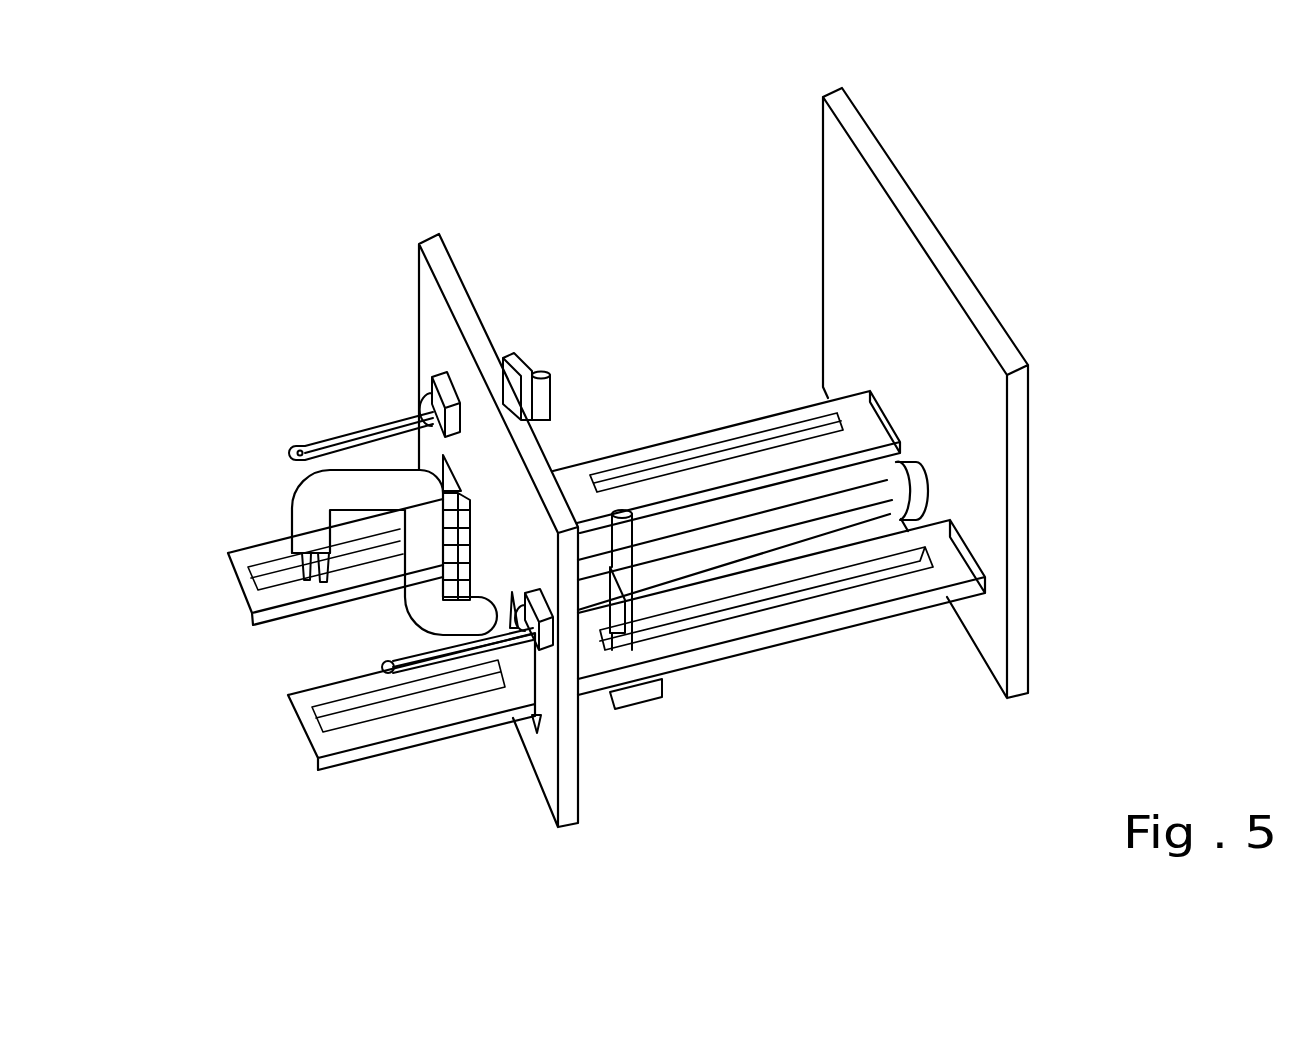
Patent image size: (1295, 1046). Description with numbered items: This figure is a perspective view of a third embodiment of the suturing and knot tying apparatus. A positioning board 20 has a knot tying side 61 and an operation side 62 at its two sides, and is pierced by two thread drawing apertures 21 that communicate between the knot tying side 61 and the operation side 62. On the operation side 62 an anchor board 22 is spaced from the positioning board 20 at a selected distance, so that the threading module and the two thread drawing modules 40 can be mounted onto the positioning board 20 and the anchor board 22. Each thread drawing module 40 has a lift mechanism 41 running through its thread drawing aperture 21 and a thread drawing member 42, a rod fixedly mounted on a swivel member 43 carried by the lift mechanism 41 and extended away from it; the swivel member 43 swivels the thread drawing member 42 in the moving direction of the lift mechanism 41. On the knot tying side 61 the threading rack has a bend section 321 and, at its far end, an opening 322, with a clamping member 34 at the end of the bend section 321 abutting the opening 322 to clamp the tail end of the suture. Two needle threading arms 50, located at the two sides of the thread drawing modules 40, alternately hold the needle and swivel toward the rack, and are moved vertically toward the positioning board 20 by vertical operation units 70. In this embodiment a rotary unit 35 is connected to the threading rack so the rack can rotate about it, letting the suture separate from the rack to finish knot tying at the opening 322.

The positioning board 20 is at (442, 260).
The thread drawing aperture 21 is at (450, 473).
The anchor board 22 is at (850, 120).
The clamping member 34 is at (300, 572).
The rotary unit 35 is at (923, 482).
The thread drawing module 40 is at (753, 413).
The lift mechanism 41 is at (703, 442).
The thread drawing member 42 is at (543, 422).
The swivel member 43 is at (650, 690).
The needle threading arm 50 is at (368, 432).
The knot tying side 61 is at (357, 210).
The operation side 62 is at (815, 82).
The vertical operation unit 70 is at (528, 652).
The bend section 321 is at (320, 507).
The opening 322 is at (358, 620).